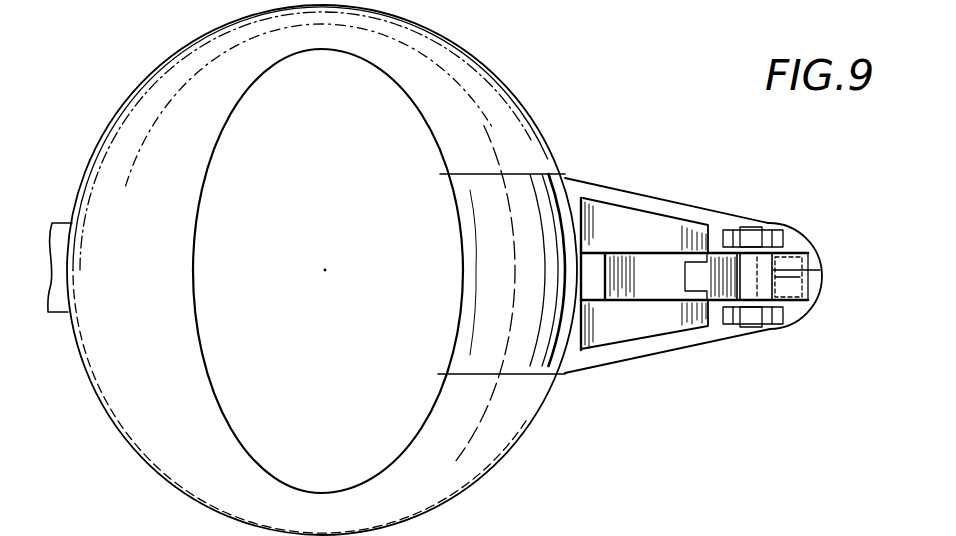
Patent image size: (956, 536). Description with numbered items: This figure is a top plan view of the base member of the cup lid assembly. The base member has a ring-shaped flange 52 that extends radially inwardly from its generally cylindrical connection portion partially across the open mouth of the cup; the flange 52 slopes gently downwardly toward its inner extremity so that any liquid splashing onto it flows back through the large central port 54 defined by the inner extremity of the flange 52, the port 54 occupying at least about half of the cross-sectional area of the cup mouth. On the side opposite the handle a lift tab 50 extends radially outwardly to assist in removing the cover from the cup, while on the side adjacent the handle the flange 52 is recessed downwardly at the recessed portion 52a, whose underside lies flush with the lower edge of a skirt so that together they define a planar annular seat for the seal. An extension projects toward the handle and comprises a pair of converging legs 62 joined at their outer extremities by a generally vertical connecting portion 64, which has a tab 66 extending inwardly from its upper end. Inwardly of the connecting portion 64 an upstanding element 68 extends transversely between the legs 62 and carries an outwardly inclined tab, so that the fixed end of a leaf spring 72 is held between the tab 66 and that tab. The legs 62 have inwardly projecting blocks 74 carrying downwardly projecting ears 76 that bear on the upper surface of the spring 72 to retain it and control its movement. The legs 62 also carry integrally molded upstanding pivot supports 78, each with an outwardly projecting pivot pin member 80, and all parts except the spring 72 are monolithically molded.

The lift tab 50 is at (62, 232).
The ring-shaped flange 52 is at (163, 265).
The recessed portion 52a is at (473, 197).
The central port 54 is at (207, 357).
The converging legs 62 is at (688, 208).
The connecting portion 64 is at (813, 290).
The tab 66 is at (807, 248).
The upstanding element 68 is at (713, 322).
The leaf spring 72 is at (717, 252).
The blocks 74 is at (693, 330).
The ears 76 is at (692, 258).
The pivot supports 78 is at (778, 242).
The pivot pin member 80 is at (760, 330).